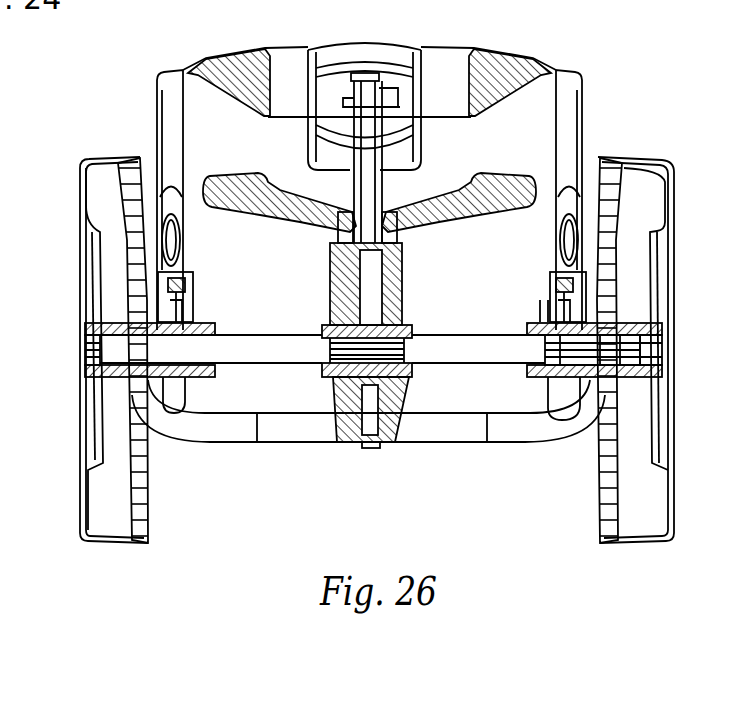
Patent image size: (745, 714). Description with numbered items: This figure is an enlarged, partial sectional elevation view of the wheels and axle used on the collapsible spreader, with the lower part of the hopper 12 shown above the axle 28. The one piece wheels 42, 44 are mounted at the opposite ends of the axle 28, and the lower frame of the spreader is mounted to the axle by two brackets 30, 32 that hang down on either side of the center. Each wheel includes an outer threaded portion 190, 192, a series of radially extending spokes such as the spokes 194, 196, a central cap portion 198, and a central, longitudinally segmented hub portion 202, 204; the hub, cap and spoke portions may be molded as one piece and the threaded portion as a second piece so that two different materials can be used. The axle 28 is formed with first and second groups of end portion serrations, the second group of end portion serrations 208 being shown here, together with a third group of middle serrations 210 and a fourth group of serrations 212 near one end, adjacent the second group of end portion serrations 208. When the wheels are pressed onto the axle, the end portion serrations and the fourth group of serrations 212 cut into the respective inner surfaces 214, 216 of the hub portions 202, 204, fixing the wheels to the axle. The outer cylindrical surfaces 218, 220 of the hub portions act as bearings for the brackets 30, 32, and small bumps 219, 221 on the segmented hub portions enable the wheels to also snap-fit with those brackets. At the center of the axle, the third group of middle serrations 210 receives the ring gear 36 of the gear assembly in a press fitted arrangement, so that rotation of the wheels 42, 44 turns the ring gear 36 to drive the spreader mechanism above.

The hopper 12 is at (252, 82).
The axle 28 is at (278, 350).
The bracket 30 is at (185, 300).
The bracket 32 is at (556, 300).
The ring gear 36 is at (400, 325).
The wheel 42 is at (96, 156).
The wheel 44 is at (608, 158).
The outer threaded portion 190 is at (113, 160).
The outer threaded portion 192 is at (640, 160).
The spoke 194 is at (90, 207).
The spoke 196 is at (645, 203).
The central cap portion 198 is at (87, 266).
The hub portion 202 is at (97, 312).
The hub portion 204 is at (667, 323).
The end portion serrations 208 is at (663, 353).
The middle serrations 210 is at (420, 335).
The serrations 212 is at (537, 355).
The inner surface 214 is at (218, 342).
The inner surface 216 is at (538, 340).
The outer cylindrical surface 218 is at (200, 322).
The bump 219 is at (225, 413).
The outer cylindrical surface 220 is at (545, 320).
The bump 221 is at (548, 390).